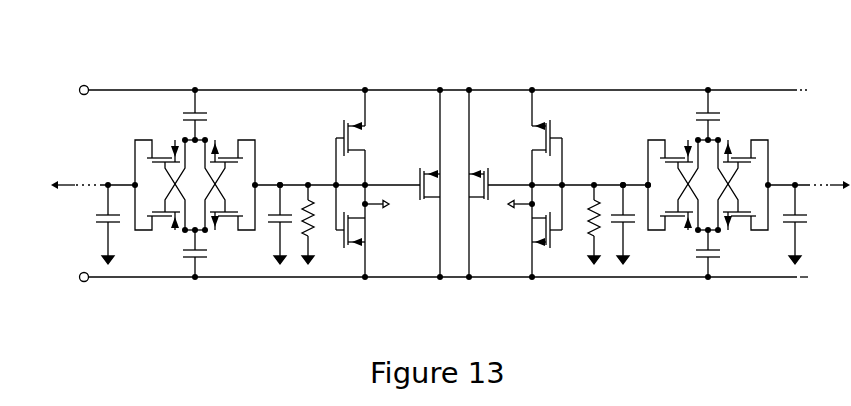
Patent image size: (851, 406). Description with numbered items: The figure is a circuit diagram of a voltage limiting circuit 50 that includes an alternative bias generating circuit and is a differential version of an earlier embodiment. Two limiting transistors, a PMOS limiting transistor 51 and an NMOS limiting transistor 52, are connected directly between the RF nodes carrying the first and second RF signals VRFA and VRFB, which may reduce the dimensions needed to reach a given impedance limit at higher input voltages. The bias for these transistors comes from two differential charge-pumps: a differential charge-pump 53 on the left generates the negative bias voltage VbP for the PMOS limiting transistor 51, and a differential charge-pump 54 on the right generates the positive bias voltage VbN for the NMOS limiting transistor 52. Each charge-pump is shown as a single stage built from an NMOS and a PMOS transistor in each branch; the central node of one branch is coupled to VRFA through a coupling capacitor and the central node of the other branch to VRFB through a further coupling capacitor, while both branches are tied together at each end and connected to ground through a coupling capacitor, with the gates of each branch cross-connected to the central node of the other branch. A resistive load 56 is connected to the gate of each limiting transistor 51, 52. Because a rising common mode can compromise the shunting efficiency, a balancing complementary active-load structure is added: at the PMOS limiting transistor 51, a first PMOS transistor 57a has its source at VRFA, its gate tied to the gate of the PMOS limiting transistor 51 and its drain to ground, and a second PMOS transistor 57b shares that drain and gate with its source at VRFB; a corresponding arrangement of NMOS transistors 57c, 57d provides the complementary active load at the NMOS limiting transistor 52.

The voltage limiting circuit 50 is at (604, 72).
The PMOS limiting transistor 51 is at (421, 168).
The NMOS limiting transistor 52 is at (487, 168).
The differential charge-pump 53 is at (312, 289).
The differential charge-pump 54 is at (790, 289).
The resistive load 56 is at (307, 200).
The first PMOS transistor 57a is at (343, 130).
The second PMOS transistor 57b is at (345, 243).
The NMOS transistor 57c is at (552, 130).
The NMOS transistor 57d is at (553, 243).